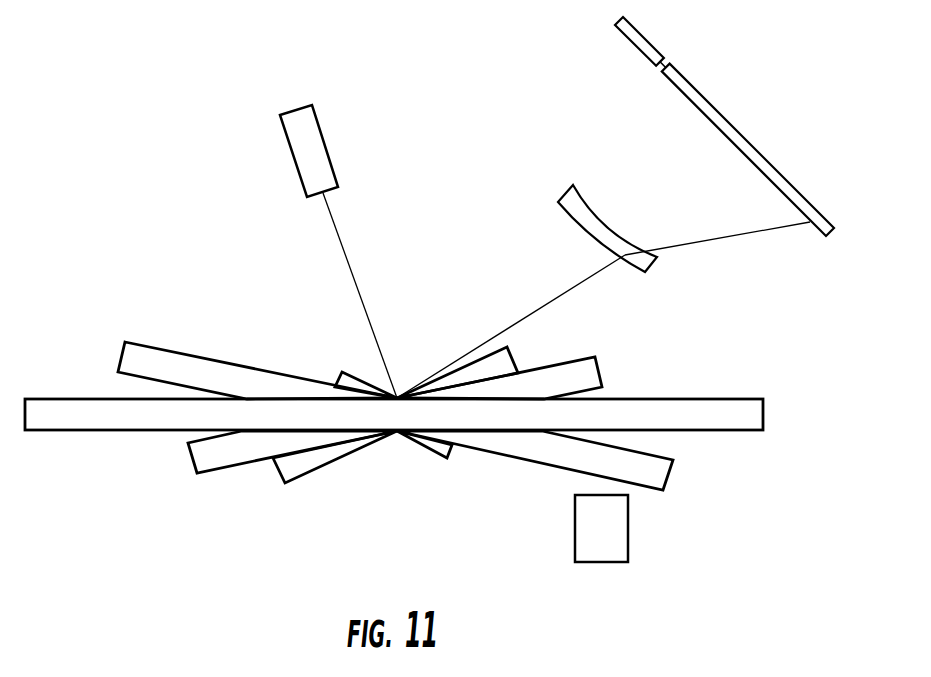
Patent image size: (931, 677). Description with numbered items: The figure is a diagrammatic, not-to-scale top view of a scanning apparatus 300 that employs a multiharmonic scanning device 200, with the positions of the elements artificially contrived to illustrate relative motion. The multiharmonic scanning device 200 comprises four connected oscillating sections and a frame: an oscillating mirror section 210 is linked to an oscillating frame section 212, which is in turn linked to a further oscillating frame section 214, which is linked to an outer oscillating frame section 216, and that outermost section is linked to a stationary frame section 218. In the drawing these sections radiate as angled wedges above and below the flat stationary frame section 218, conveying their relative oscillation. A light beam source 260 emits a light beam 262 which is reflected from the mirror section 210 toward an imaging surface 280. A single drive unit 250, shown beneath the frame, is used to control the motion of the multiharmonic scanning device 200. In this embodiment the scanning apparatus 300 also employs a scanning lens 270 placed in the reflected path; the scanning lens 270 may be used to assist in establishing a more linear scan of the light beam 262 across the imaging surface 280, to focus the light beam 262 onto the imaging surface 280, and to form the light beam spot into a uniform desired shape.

The multiharmonic scanning device 200 is at (736, 330).
The oscillating mirror section 210 is at (437, 455).
The oscillating frame section 212 is at (315, 470).
The oscillating frame section 214 is at (553, 365).
The oscillating frame section 216 is at (187, 352).
The stationary frame section 218 is at (757, 398).
The drive unit 250 is at (602, 562).
The light beam source 260 is at (323, 132).
The light beam 262 is at (348, 258).
The scanning lens 270 is at (590, 213).
The imaging surface 280 is at (692, 102).
The scanning apparatus 300 is at (203, 168).